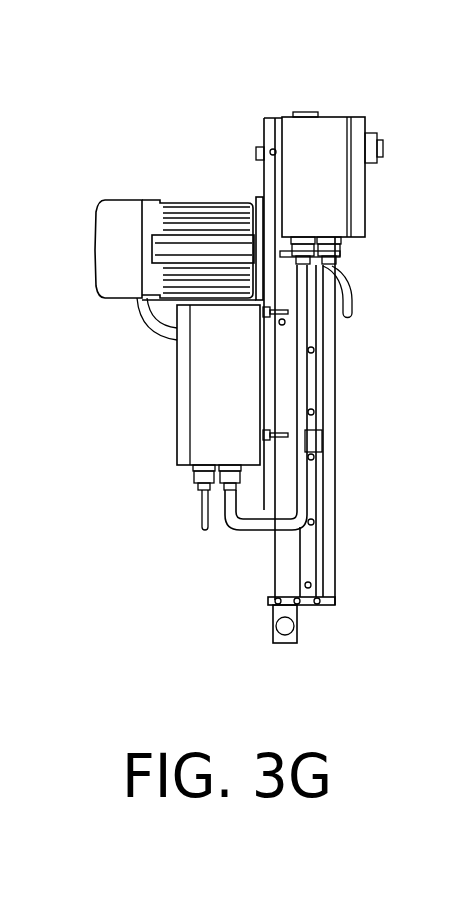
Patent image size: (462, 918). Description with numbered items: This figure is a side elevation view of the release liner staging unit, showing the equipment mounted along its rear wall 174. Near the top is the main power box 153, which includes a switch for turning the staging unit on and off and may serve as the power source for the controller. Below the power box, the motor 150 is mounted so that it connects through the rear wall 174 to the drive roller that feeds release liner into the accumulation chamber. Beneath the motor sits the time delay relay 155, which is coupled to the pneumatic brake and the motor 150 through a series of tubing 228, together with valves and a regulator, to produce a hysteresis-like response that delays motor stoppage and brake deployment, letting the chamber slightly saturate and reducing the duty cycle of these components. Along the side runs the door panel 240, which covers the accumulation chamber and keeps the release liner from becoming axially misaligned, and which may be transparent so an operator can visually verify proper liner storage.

The motor 150 is at (123, 217).
The main power box 153 is at (330, 130).
The time delay relay 155 is at (200, 383).
The rear wall 174 is at (266, 138).
The tubing 228 is at (238, 522).
The door panel 240 is at (325, 438).